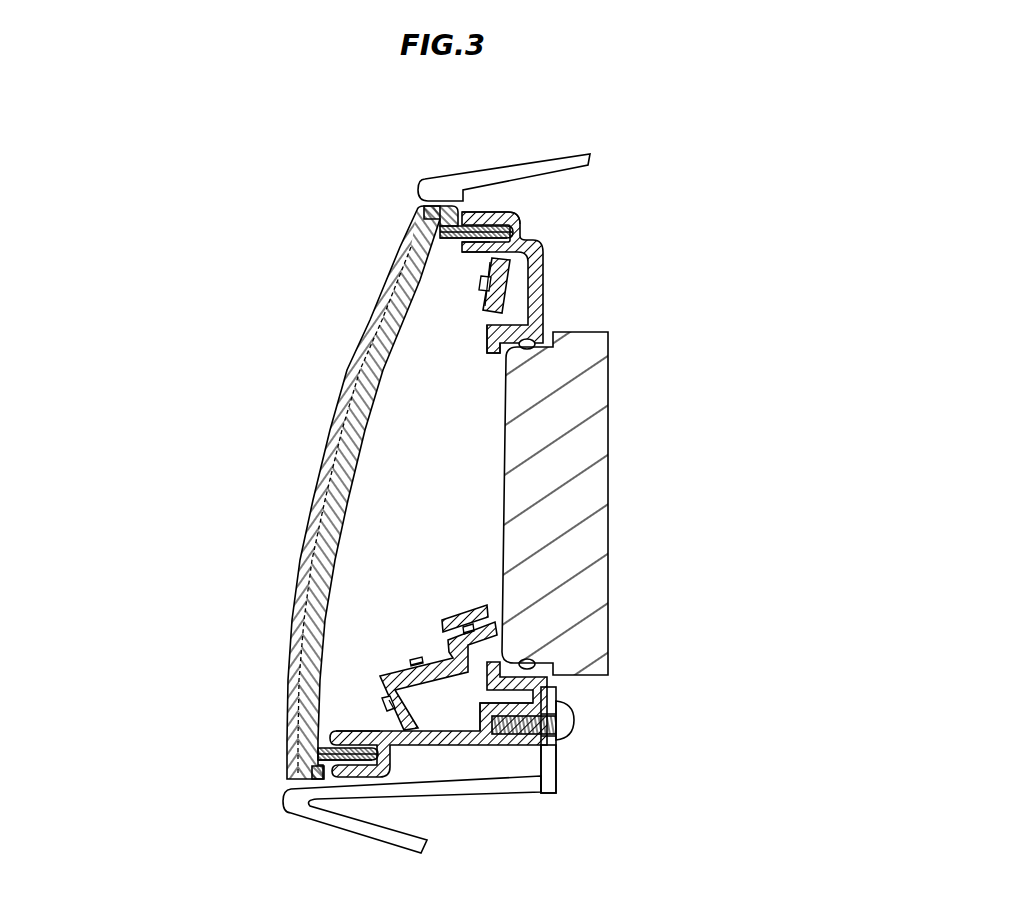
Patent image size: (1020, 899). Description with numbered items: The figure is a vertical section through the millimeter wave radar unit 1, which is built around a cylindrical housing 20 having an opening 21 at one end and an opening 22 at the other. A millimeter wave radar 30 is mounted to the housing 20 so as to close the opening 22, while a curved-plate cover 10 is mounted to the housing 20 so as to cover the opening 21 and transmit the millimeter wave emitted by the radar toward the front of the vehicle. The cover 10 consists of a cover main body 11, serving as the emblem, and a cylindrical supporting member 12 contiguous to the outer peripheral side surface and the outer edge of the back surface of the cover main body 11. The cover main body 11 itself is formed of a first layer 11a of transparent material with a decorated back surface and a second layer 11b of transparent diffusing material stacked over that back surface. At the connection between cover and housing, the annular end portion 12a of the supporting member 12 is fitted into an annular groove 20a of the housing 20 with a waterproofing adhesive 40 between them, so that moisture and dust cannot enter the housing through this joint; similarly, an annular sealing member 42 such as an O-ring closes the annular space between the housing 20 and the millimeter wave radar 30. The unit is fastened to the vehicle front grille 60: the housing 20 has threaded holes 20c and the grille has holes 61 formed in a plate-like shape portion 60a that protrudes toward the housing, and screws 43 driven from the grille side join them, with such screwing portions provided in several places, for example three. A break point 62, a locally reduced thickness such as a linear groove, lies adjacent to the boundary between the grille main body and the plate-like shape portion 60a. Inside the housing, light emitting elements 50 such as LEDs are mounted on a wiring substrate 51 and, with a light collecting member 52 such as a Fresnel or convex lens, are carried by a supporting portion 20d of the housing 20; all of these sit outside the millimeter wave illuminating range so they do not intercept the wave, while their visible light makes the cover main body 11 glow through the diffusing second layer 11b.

The millimeter wave radar unit 1 is at (327, 238).
The cover 10 is at (323, 387).
The cover main body 11 is at (237, 508).
The first layer 11a is at (315, 488).
The second layer 11b is at (325, 522).
The supporting member 12 is at (452, 207).
The end portion 12a is at (487, 228).
The housing 20 is at (543, 312).
The annular groove 20a is at (517, 222).
The threaded hole 20c is at (512, 744).
The supporting portion 20d is at (507, 284).
The opening 21 is at (462, 258).
The opening 22 is at (489, 354).
The millimeter wave radar 30 is at (603, 517).
The waterproofing adhesive 40 is at (514, 229).
The annular sealing member 42 is at (535, 343).
The screw 43 is at (571, 710).
The light emitting element 50 is at (483, 281).
The wiring substrate 51 is at (486, 306).
The light collecting member 52 is at (453, 616).
The front grille 60 is at (563, 160).
The plate-like shape portion 60a is at (548, 689).
The hole 61 is at (556, 735).
The break point 62 is at (549, 775).